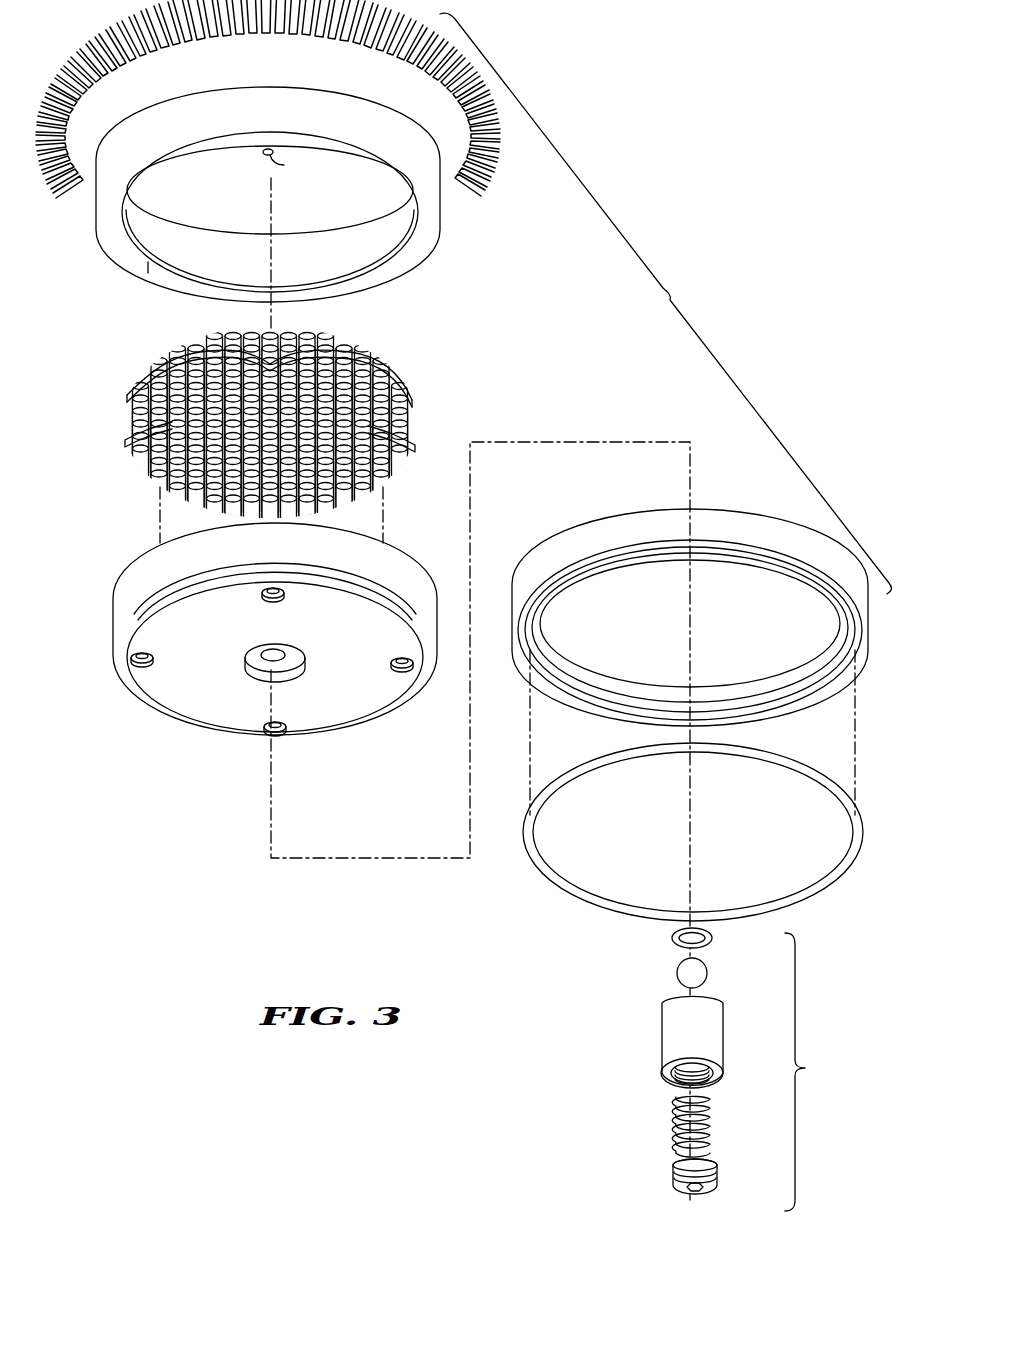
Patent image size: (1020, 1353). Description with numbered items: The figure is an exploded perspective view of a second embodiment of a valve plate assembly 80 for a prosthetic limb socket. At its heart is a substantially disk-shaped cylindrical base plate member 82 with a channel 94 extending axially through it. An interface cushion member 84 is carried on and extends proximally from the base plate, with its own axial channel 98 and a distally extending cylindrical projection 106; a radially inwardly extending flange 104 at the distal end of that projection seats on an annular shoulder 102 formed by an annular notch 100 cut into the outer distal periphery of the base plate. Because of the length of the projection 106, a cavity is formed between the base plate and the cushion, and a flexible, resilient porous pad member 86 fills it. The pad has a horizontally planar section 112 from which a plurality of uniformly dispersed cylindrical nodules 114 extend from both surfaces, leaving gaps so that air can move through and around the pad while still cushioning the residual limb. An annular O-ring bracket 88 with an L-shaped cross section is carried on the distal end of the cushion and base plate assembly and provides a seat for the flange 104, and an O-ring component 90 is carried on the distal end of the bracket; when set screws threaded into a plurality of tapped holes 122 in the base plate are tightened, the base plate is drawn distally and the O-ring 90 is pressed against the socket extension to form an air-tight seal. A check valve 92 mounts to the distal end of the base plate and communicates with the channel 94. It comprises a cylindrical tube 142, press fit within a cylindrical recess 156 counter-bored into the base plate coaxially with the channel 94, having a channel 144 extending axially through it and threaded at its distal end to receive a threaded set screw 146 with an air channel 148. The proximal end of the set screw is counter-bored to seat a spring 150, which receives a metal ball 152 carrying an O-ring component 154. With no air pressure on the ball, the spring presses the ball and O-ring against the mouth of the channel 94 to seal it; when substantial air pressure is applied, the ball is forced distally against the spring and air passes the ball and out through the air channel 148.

The valve plate assembly 80 is at (665, 303).
The base plate member 82 is at (120, 595).
The interface cushion member 84 is at (93, 135).
The porous pad member 86 is at (412, 362).
The O-ring bracket 88 is at (747, 530).
The O-ring component 90 is at (855, 815).
The check valve 92 is at (809, 1072).
The channel 94 is at (302, 660).
The channel 98 is at (287, 176).
The annular notch 100 is at (118, 660).
The annular shoulder 102 is at (432, 642).
The radially inwardly extending flange 104 is at (148, 262).
The cylindrical projection 106 is at (432, 180).
The horizontally planar section 112 is at (128, 398).
The cylindrical nodules 114 is at (233, 330).
The tapped holes 122 is at (284, 600).
The cylindrical tube 142 is at (673, 1026).
The channel 144 is at (680, 1078).
The threaded set screw 146 is at (676, 1186).
The air channel 148 is at (696, 1193).
The spring 150 is at (715, 1116).
The metal ball 152 is at (706, 970).
The O-ring component 154 is at (672, 938).
The cylindrical recess 156 is at (262, 667).